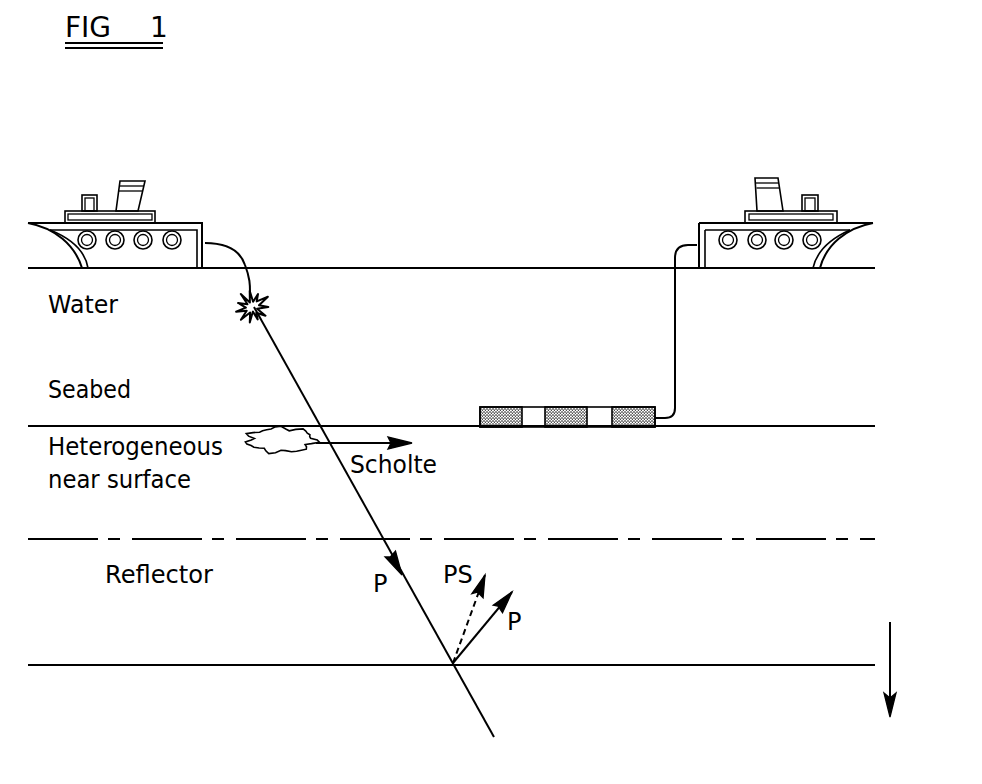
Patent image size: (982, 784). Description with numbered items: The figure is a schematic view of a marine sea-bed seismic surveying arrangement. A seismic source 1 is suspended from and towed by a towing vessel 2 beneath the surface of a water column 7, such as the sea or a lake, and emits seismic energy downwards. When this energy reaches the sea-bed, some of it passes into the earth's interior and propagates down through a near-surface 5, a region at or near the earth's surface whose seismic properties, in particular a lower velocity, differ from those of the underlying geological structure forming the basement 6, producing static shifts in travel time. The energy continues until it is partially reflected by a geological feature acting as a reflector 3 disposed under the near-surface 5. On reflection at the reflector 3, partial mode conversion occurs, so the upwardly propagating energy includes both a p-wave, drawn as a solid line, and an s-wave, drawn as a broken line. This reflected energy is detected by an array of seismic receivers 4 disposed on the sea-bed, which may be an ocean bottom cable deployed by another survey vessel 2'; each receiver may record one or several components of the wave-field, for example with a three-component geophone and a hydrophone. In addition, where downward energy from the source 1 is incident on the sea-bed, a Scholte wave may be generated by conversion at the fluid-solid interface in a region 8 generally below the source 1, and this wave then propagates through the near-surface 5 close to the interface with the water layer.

The seismic source 1 is at (267, 308).
The towing vessel 2 is at (139, 187).
The survey vessel 2' is at (730, 244).
The reflector 3 is at (146, 665).
The seismic receivers 4 is at (638, 407).
The near-surface 5 is at (463, 498).
The basement 6 is at (888, 653).
The water column 7 is at (463, 310).
The region 8 is at (280, 453).